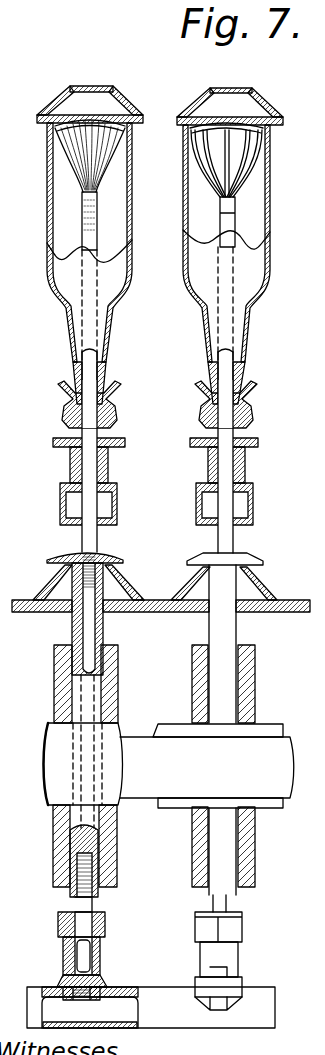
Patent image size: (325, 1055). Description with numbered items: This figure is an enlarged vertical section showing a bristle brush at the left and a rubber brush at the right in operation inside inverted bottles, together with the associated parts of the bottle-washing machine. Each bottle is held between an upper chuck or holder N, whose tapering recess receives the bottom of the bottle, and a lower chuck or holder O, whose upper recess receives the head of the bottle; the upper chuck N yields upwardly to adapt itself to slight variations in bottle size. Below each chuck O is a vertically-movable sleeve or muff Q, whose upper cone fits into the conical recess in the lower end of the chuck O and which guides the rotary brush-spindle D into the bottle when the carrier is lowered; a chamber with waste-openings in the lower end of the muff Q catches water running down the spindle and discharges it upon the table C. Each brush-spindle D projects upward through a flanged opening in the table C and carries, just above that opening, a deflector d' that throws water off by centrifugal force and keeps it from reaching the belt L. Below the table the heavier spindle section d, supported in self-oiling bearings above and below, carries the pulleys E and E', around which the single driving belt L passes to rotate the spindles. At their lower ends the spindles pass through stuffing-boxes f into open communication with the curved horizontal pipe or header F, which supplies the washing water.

The upper chuck or holder N is at (140, 114).
The lower chuck or holder O is at (63, 405).
The guiding sleeve or muff Q is at (106, 471).
The rotary brush-spindle D is at (83, 536).
The deflector d' is at (150, 559).
The table C is at (151, 600).
The spindle section d is at (137, 733).
The pulley E' is at (83, 764).
The belt L is at (144, 732).
The pulley E is at (221, 754).
The stuffing-box f is at (62, 954).
The pipe or header F is at (157, 988).